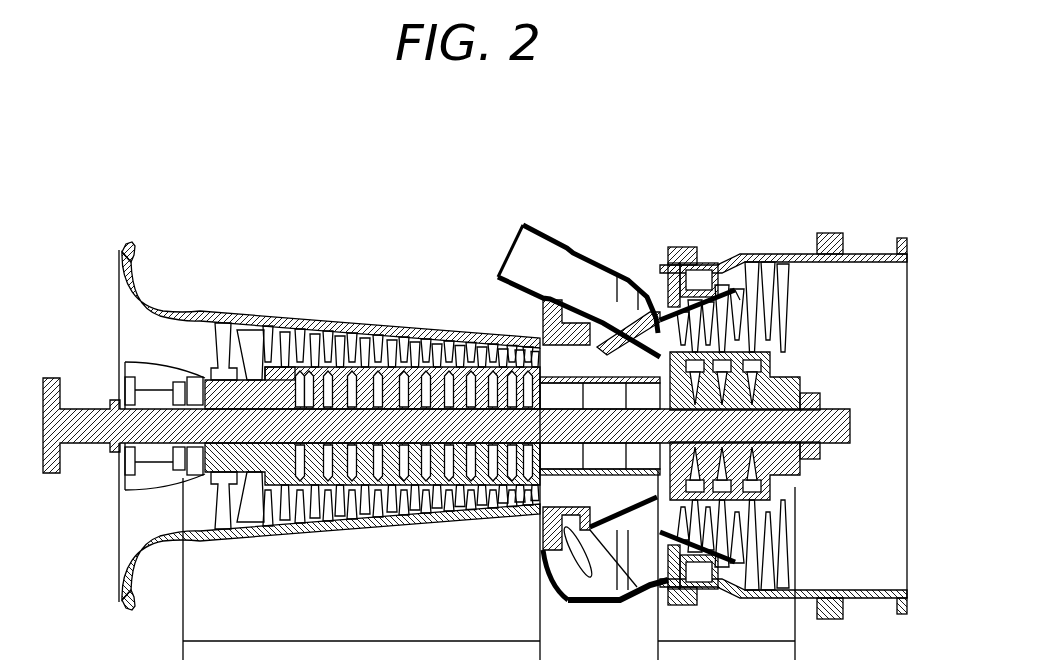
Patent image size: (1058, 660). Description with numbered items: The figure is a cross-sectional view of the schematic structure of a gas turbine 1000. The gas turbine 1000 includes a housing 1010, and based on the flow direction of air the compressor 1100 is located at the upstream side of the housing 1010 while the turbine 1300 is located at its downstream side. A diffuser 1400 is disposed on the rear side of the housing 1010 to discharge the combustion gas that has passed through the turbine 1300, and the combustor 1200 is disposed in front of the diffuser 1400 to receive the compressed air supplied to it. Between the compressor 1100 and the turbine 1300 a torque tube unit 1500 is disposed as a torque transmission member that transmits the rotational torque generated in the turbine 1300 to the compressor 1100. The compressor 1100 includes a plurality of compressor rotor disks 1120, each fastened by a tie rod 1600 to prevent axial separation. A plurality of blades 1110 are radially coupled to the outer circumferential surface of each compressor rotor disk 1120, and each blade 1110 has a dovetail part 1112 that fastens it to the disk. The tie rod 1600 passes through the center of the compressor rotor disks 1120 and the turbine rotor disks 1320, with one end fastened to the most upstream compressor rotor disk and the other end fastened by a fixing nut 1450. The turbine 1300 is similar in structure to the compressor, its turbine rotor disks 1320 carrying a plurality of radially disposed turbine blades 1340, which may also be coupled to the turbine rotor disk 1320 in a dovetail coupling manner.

The gas turbine 1000 is at (812, 83).
The housing 1010 is at (377, 292).
The compressor 1100 is at (329, 427).
The blades 1110 is at (270, 318).
The dovetail part 1112 is at (293, 318).
The compressor rotor disks 1120 is at (262, 316).
The combustor 1200 is at (538, 205).
The turbine 1300 is at (813, 427).
The turbine rotor disks 1320 is at (758, 352).
The turbine blades 1340 is at (740, 333).
The diffuser 1400 is at (868, 232).
The fixing nut 1450 is at (822, 404).
The torque tube unit 1500 is at (554, 364).
The tie rod 1600 is at (192, 428).